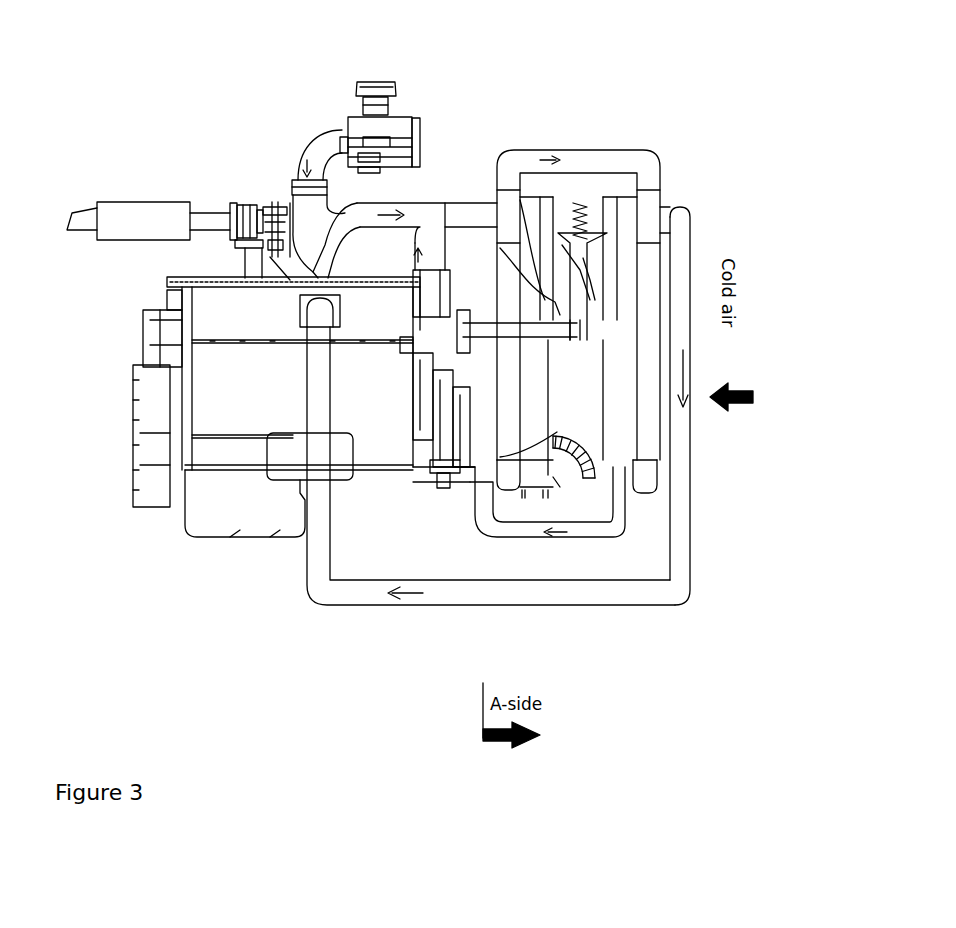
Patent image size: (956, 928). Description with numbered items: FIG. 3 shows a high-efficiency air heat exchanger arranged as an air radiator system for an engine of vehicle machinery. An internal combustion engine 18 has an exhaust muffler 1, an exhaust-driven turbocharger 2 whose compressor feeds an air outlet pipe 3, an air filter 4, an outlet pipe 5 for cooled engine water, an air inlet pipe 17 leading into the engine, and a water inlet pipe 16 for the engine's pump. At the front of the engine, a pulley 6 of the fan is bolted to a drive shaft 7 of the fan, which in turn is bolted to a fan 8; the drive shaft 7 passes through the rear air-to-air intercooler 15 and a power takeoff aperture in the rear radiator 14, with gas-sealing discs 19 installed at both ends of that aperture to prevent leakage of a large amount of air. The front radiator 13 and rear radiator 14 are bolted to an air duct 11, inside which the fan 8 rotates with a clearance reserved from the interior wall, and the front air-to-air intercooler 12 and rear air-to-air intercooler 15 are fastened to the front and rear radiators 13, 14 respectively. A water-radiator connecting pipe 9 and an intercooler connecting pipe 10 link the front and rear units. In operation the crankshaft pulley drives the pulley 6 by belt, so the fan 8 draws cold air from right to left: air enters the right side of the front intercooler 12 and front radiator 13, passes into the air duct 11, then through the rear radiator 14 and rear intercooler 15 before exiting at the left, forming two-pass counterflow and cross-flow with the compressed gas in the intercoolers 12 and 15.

The exhaust muffler 1 is at (165, 213).
The exhaust-driven turbocharger 2 is at (245, 220).
The air outlet pipe 3 is at (360, 220).
The air filter 4 is at (400, 130).
The outlet pipe 5 is at (440, 207).
The pulley 6 is at (463, 270).
The drive shaft 7 is at (558, 325).
The fan 8 is at (577, 297).
The water-radiator connecting pipe 9 is at (575, 247).
The intercooler connecting pipe 10 is at (637, 163).
The air duct 11 is at (583, 258).
The front air-to-air intercooler 12 is at (648, 430).
The front radiator 13 is at (630, 450).
The rear radiator 14 is at (545, 463).
The rear air-to-air intercooler 15 is at (513, 465).
The water inlet pipe 16 is at (520, 537).
The air inlet pipe 17 is at (447, 605).
The internal combustion engine 18 is at (257, 320).
The gas-sealing discs 19 is at (495, 348).